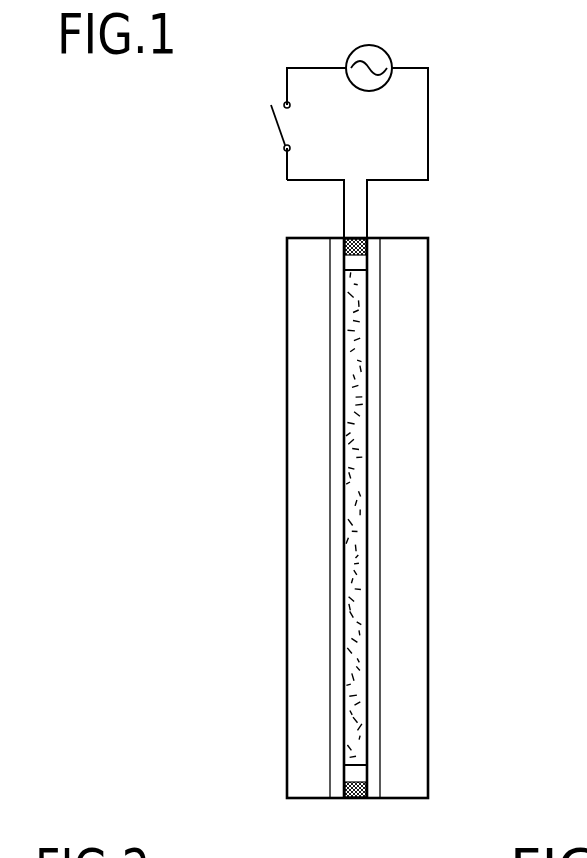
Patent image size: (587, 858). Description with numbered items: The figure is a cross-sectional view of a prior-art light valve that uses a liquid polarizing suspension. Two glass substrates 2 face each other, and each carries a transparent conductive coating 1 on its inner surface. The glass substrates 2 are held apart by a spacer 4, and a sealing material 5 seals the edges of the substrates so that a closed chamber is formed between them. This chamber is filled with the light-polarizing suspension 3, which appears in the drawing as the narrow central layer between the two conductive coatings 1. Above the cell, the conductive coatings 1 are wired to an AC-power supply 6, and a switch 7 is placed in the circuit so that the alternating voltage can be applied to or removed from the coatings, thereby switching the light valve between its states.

The transparent conductive coating 1 is at (338, 362).
The glass substrate 2 is at (303, 421).
The light-polarizing suspension 3 is at (348, 513).
The spacer 4 is at (356, 263).
The sealing material 5 is at (368, 238).
The AC-power supply 6 is at (356, 56).
The switch 7 is at (257, 126).